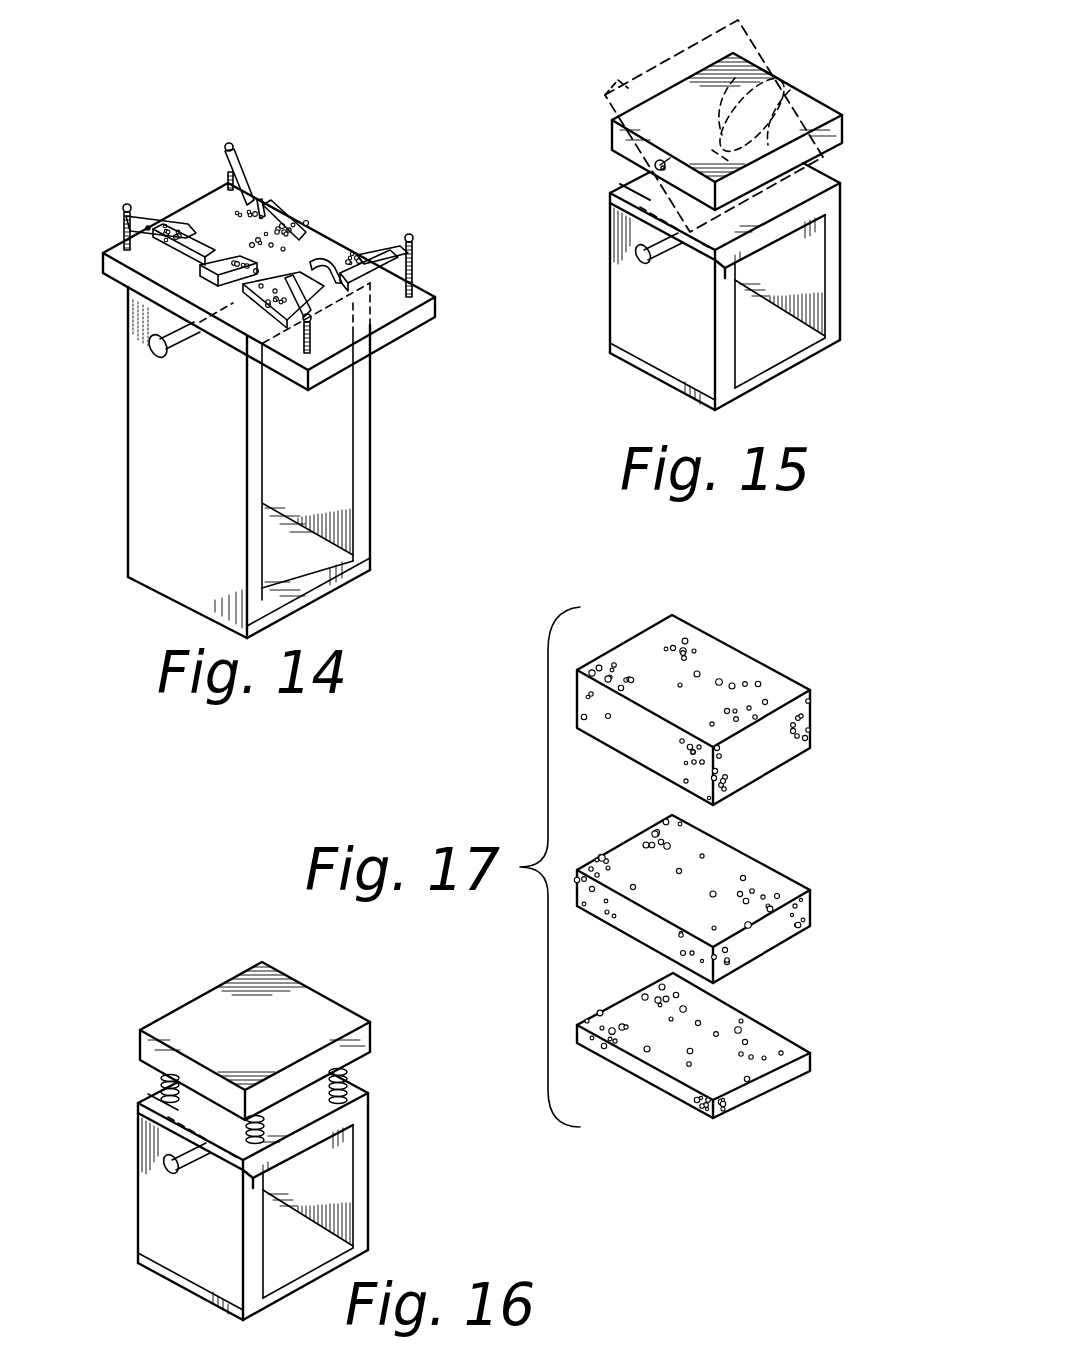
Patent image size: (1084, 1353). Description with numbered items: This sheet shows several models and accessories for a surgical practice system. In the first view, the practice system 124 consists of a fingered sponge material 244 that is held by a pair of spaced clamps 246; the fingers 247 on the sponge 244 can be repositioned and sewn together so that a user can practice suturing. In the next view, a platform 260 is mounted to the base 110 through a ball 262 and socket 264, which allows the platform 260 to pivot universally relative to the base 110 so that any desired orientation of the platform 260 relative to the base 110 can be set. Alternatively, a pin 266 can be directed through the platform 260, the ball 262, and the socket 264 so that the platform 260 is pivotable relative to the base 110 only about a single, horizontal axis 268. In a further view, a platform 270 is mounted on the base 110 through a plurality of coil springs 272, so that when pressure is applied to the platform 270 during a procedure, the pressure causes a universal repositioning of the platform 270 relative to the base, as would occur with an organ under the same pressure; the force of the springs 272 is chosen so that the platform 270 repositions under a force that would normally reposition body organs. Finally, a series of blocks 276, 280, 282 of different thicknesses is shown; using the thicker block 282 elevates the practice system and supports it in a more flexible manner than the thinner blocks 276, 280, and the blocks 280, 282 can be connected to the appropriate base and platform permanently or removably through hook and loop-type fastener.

In FIG. 15, the base 110 is at (838, 292).
In FIG. 14, the practice system 124 is at (362, 236).
In FIG. 14, the fingered sponge material 244 is at (310, 216).
In FIG. 14, the spaced clamps 246 is at (228, 152).
In FIG. 14, the fingers 247 is at (297, 212).
In FIG. 15, the platform 260 is at (817, 112).
In FIG. 15, the ball 262 is at (778, 98).
In FIG. 15, the socket 264 is at (784, 62).
In FIG. 15, the pin 266 is at (655, 167).
In FIG. 15, the horizontal axis 268 is at (642, 190).
In FIG. 16, the platform 270 is at (326, 1017).
In FIG. 16, the coil springs 272 is at (268, 1121).
In FIG. 17, the block 276 is at (767, 1045).
In FIG. 17, the block 280 is at (767, 880).
In FIG. 17, the block 282 is at (767, 680).